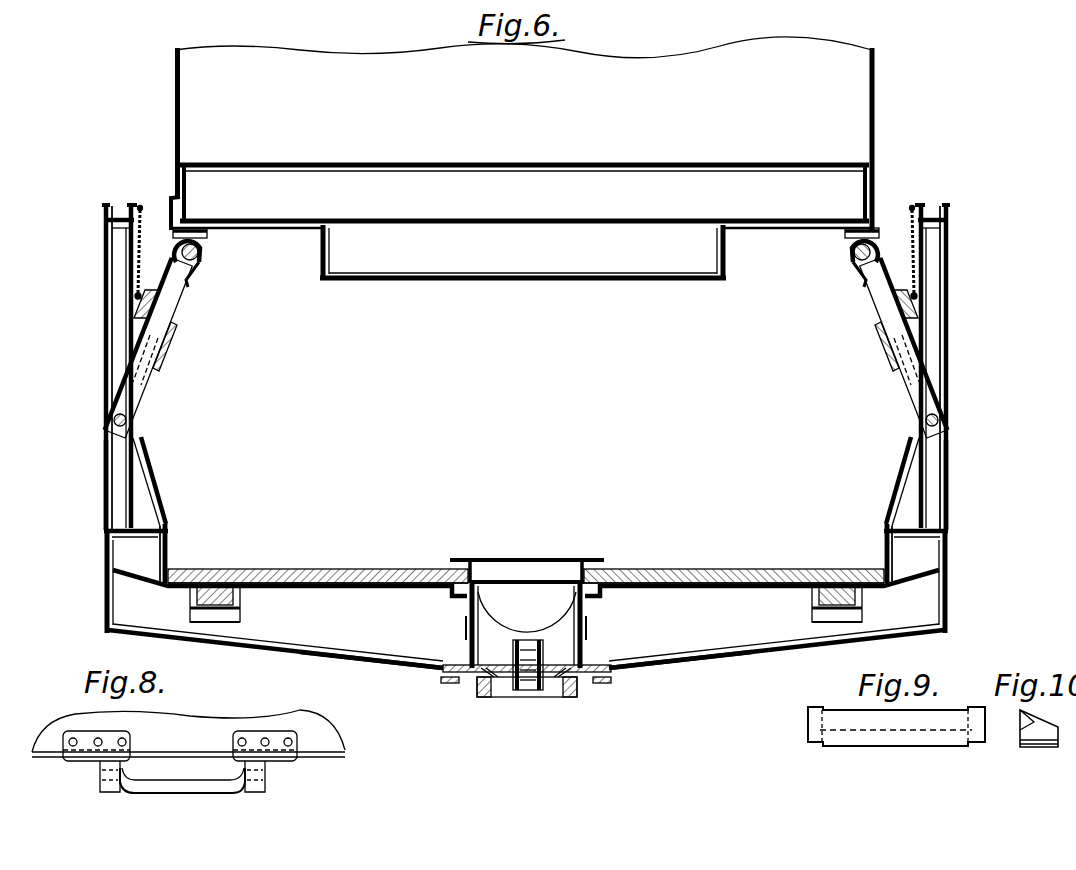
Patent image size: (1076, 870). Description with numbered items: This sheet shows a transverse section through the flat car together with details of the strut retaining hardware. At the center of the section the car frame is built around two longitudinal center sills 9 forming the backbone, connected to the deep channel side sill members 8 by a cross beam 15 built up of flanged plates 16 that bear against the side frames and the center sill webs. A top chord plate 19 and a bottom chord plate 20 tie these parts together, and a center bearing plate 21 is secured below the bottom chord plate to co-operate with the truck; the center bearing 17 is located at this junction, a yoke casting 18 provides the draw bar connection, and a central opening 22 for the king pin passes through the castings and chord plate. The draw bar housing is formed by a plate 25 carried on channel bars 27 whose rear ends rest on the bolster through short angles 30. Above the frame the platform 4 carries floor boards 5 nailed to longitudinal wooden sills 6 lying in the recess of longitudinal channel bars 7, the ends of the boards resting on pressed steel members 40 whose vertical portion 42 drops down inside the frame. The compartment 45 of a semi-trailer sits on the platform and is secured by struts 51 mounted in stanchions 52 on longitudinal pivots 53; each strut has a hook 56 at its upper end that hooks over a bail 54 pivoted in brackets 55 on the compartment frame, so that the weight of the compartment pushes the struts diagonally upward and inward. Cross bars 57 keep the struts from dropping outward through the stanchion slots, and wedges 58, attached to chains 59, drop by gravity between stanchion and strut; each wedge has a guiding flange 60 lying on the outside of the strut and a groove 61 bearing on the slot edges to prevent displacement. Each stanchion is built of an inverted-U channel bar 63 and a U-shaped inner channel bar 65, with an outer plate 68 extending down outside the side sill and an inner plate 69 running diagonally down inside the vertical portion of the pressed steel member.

In FIG. 6, the platform 4 is at (708, 570).
In FIG. 6, the floor boards 5 is at (245, 570).
In FIG. 6, the longitudinal wooden sills 6 is at (241, 600).
In FIG. 6, the longitudinal channel bars 7 is at (241, 616).
In FIG. 6, the side sill members 8 is at (104, 538).
In FIG. 6, the center sills 9 is at (467, 626).
In FIG. 6, the cross beam 15 is at (758, 663).
In FIG. 6, the flange plates 16 is at (335, 642).
In FIG. 6, the center bearing 17 is at (530, 682).
In FIG. 6, the yoke casting 18 is at (500, 660).
In FIG. 6, the top chord plate 19 is at (402, 575).
In FIG. 6, the bottom chord plate 20 is at (215, 647).
In FIG. 6, the center bearing plate 21 is at (485, 692).
In FIG. 6, the central opening 22 is at (527, 638).
In FIG. 6, the plate 25 is at (538, 559).
In FIG. 6, the channel bars 27 is at (470, 559).
In FIG. 6, the short angles 30 is at (496, 572).
In FIG. 6, the pressed steel members 40 is at (163, 541).
In FIG. 6, the vertical portion 42 is at (170, 553).
In FIG. 6, the compartment 45 is at (872, 112).
In FIG. 6, the struts 51 is at (186, 310).
In FIG. 6, the stanchions 52 is at (107, 368).
In FIG. 6, the pivots 53 is at (131, 408).
In FIG. 6, the bail 54 is at (200, 262).
In FIG. 8, the bail 54 is at (205, 788).
In FIG. 6, the brackets 55 is at (208, 231).
In FIG. 8, the brackets 55 is at (134, 733).
In FIG. 6, the hooks 56 is at (206, 250).
In FIG. 6, the cross bars 57 is at (175, 345).
In FIG. 6, the wedges 58 is at (120, 312).
In FIG. 9, the wedges 58 is at (915, 724).
In FIG. 10, the wedges 58 is at (1036, 724).
In FIG. 6, the chains 59 is at (140, 211).
In FIG. 9, the guiding flanges 60 is at (813, 712).
In FIG. 10, the guiding flanges 60 is at (1022, 716).
In FIG. 10, the grooves 61 is at (1022, 746).
In FIG. 6, the channel bar 63 is at (116, 205).
In FIG. 6, the inner channel bar 65 is at (120, 272).
In FIG. 6, the outer plate 68 is at (104, 484).
In FIG. 6, the inner plate 69 is at (160, 478).